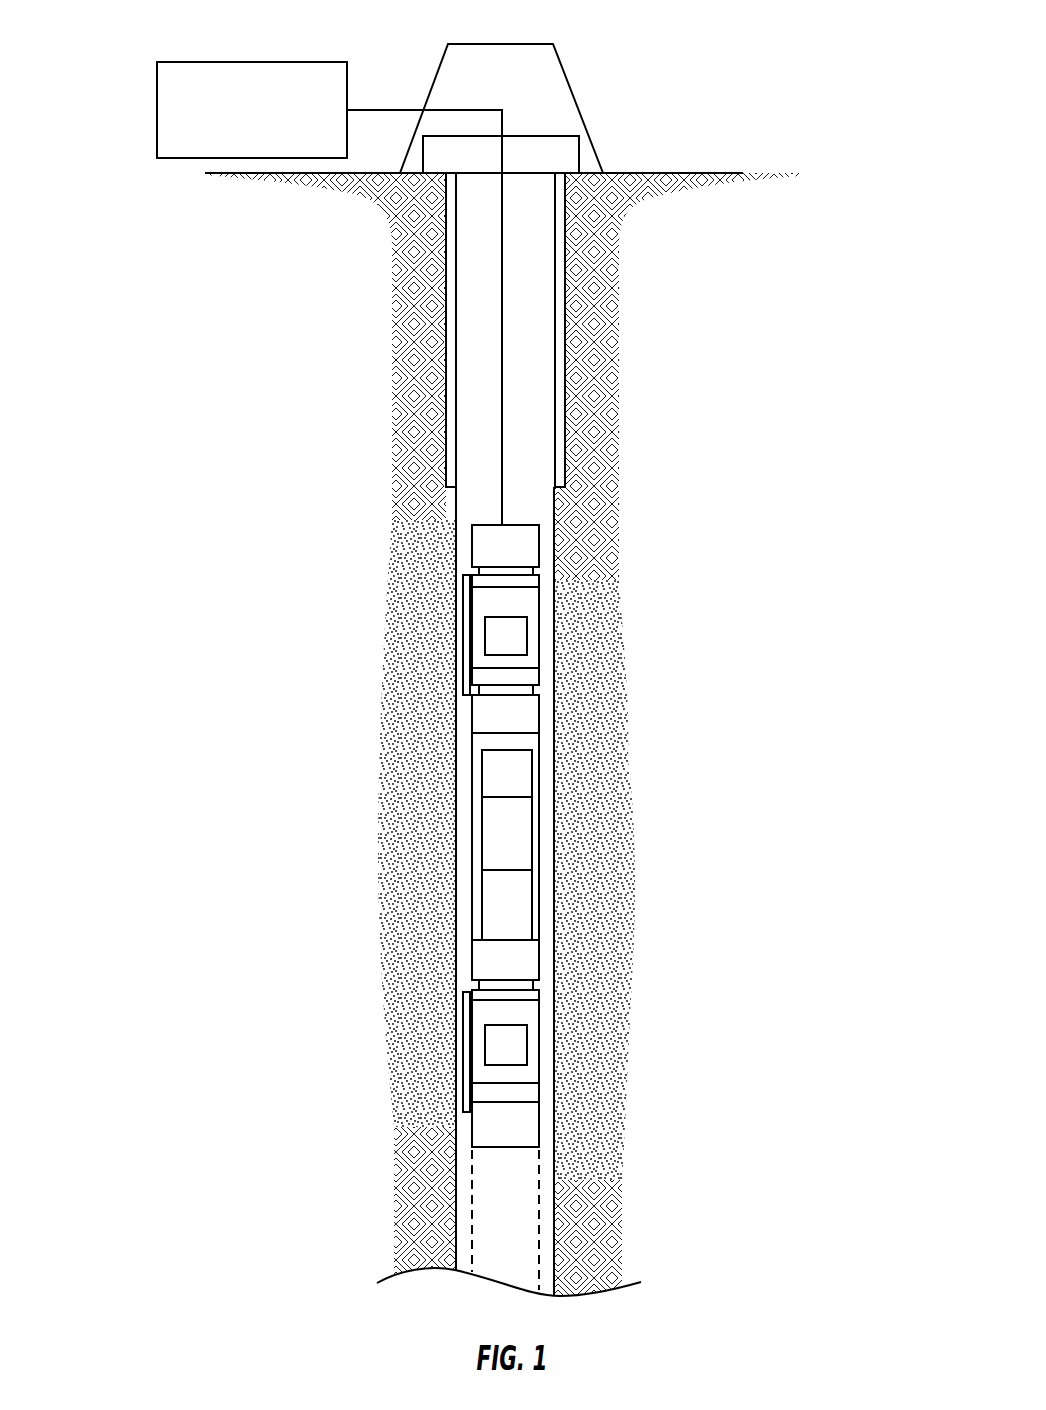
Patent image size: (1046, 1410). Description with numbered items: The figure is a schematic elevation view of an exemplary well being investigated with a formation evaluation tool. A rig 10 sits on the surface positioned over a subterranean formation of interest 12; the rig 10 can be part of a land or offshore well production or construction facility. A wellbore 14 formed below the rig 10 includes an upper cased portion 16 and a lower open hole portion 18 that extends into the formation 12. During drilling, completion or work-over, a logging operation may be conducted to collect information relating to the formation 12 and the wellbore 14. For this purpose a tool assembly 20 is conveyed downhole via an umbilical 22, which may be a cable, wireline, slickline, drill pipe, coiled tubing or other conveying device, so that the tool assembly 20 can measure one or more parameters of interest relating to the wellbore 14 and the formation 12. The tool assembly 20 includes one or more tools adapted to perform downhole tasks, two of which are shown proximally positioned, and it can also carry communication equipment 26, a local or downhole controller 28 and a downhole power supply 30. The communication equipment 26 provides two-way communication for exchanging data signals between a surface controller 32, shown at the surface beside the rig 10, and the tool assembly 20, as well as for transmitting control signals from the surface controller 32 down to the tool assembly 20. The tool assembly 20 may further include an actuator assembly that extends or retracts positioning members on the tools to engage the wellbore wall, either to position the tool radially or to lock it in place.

The rig 10 is at (597, 100).
The subterranean formation of interest 12 is at (660, 686).
The wellbore 14 is at (538, 456).
The cased portion 16 is at (568, 313).
The open hole portion 18 is at (456, 517).
The tool assembly 20 is at (665, 770).
The umbilical 22 is at (502, 408).
The communication equipment 26 is at (481, 887).
The downhole controller 28 is at (481, 830).
The downhole power supply 30 is at (481, 775).
The surface controller 32 is at (168, 62).